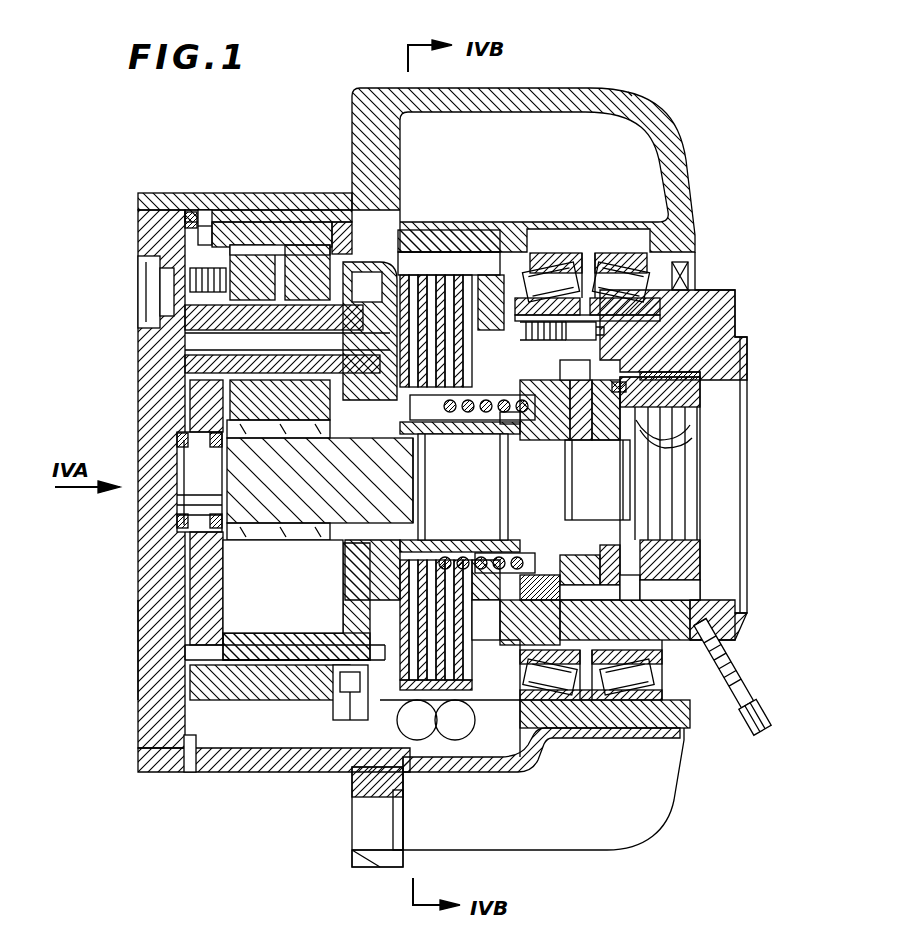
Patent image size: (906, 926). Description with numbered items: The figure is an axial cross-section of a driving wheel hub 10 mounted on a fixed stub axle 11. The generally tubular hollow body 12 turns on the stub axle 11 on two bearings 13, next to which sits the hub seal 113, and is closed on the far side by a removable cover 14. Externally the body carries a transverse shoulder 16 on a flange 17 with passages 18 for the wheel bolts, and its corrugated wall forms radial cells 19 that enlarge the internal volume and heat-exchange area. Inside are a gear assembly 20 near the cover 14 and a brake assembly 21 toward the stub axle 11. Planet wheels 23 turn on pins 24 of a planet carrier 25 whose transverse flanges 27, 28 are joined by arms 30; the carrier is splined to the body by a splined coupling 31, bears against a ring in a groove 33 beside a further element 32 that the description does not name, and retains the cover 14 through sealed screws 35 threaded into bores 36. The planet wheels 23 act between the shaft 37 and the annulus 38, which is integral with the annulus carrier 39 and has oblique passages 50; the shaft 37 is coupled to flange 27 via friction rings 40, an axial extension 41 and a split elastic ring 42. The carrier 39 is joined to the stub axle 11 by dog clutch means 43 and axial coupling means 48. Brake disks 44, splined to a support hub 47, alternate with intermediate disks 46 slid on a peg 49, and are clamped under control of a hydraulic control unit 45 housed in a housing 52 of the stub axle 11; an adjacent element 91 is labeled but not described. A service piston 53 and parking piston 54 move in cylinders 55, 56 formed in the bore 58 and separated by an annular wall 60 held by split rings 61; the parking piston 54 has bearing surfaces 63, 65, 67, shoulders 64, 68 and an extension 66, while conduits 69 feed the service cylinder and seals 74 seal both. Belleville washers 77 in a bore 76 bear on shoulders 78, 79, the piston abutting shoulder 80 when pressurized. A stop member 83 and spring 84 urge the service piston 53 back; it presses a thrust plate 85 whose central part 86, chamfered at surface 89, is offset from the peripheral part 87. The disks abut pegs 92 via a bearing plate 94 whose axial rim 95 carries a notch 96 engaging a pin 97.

The wheel hub 10 is at (625, 90).
The stub axle 11 is at (736, 280).
The hollow body 12 is at (291, 186).
The bearings 13 is at (551, 244).
The cover 14 is at (128, 334).
The transverse shoulder 16 is at (352, 868).
The flange 17 is at (372, 868).
The passages 18 is at (352, 848).
The radial cells 19 is at (543, 126).
The gear assembly 20 is at (246, 222).
The brake assembly 21 is at (424, 236).
The planet wheels 23 is at (262, 286).
The pins 24 is at (238, 332).
The planet carrier 25 is at (164, 622).
The transverse flange 27 is at (188, 589).
The transverse flange 28 is at (344, 600).
The arms 30 is at (280, 694).
The splined coupling 31 is at (189, 772).
The seal 32 is at (187, 212).
The groove 33 is at (203, 212).
The sealed screws 35 is at (146, 276).
The threaded bore 36 is at (206, 292).
The shaft 37 is at (304, 488).
The annulus 38 is at (340, 222).
The annulus carrier 39 is at (595, 684).
The friction rings 40 is at (176, 532).
The axial extension 41 is at (210, 485).
The split elastic ring 42 is at (172, 436).
The direct-drive dog clutch means 43 is at (591, 670).
The brake disks 44 is at (462, 685).
The hydraulic control unit 45 is at (626, 380).
The intermediate disks 46 is at (430, 598).
The support hub 47 is at (358, 370).
The axial coupling means 48 is at (587, 300).
The peg 49 is at (405, 263).
The oblique passages 50 is at (458, 740).
The housing 52 is at (668, 374).
The service annular piston 53 is at (540, 420).
The parking annular piston 54 is at (628, 428).
The cylinder of the service piston 55 is at (596, 375).
The cylinder of the parking piston 56 is at (700, 372).
The internal bore 58 is at (516, 416).
The annular wall 60 is at (598, 555).
The split elastic rings 61 is at (588, 402).
The bearing surface 63 is at (536, 575).
The transverse shoulder 64 is at (578, 404).
The bearing surface 65 is at (582, 380).
The axial extension 66 is at (405, 450).
The bearing surface 67 is at (692, 632).
The transverse shoulder 68 is at (614, 580).
The conduits 69 is at (716, 620).
The seals 74 is at (580, 585).
The bore 76 is at (700, 390).
The Belleville washers 77 is at (672, 450).
The transverse shoulder 78 is at (696, 425).
The transverse shoulder 79 is at (642, 548).
The transverse shoulder 80 is at (696, 578).
The stop member 83 is at (430, 402).
The spring 84 is at (462, 434).
The thrust plate 85 is at (478, 560).
The central part 86 is at (506, 562).
The peripheral part 87 is at (472, 640).
The chamfered surface 89 is at (474, 600).
The snap ring 91 is at (486, 296).
The pegs 92 is at (275, 362).
The bearing plate 94 is at (371, 252).
The axial rim 95 is at (307, 272).
The notch 96 is at (352, 700).
The pin 97 is at (340, 655).
The hub seal 113 is at (687, 252).